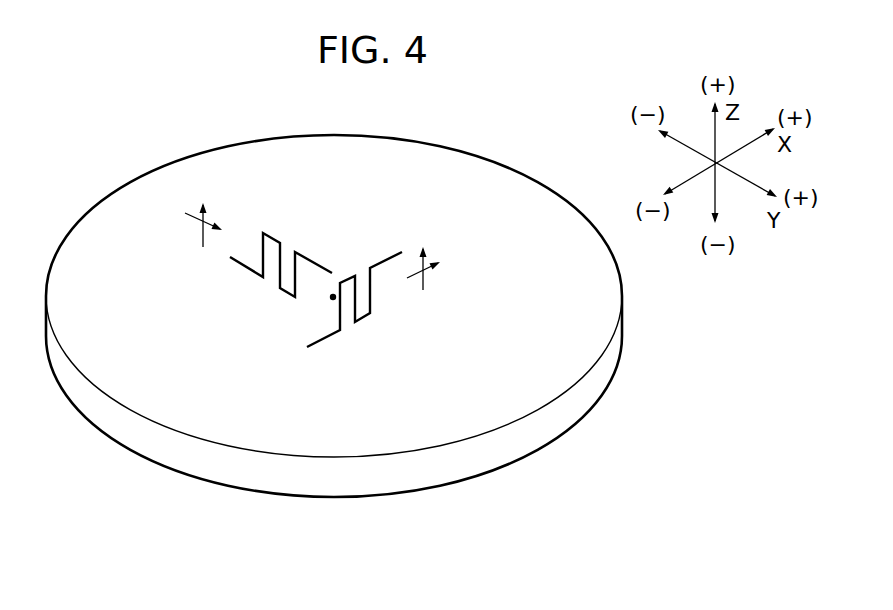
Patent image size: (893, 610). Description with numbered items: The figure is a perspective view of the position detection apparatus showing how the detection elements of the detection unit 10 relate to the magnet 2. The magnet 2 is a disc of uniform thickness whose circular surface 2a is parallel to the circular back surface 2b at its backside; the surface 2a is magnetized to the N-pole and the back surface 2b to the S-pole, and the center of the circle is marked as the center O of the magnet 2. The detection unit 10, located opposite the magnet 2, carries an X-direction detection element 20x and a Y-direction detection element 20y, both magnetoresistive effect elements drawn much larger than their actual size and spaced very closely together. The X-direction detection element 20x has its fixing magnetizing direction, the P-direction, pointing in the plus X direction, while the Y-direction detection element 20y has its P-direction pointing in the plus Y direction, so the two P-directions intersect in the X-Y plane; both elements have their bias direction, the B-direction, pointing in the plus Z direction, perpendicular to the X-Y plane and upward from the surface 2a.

The magnet 2 is at (366, 333).
The surface 2a is at (593, 318).
The back surface 2b is at (522, 460).
The detection unit 10 is at (340, 222).
The X-direction detection element 20x is at (363, 330).
The Y-direction detection element 20y is at (261, 287).
The center of the magnet O is at (333, 297).